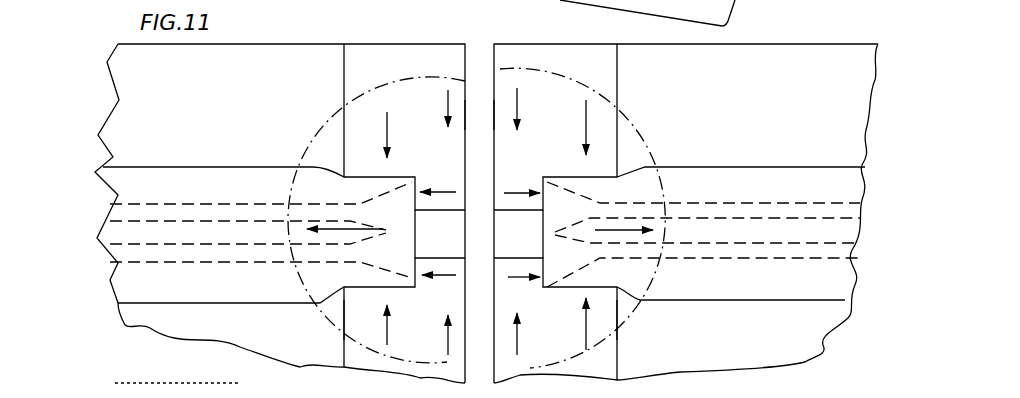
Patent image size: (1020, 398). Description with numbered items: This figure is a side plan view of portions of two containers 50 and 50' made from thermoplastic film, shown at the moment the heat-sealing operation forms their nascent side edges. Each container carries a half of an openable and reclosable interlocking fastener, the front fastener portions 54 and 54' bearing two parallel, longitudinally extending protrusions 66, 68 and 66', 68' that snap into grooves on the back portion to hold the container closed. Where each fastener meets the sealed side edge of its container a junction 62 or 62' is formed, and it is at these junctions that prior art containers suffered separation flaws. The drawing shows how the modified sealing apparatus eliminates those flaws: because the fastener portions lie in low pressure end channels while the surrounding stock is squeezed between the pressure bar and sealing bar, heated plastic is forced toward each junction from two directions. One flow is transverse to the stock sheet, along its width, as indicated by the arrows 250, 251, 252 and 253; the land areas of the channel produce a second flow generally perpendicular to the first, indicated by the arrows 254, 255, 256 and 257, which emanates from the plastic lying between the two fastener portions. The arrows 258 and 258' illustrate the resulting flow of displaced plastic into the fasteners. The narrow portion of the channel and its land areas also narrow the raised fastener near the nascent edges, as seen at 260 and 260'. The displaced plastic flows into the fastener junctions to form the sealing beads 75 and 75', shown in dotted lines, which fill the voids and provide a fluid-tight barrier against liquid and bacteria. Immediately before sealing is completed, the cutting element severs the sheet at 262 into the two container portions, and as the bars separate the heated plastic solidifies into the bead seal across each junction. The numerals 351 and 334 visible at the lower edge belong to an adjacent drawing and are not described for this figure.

The container 50 is at (280, 213).
The container 50' is at (689, 213).
The front half of fastener 54 is at (261, 205).
The front half of fastener 54' is at (704, 212).
The protrusion 66 is at (235, 206).
The protrusion 66' is at (730, 207).
The protrusion 68 is at (235, 255).
The protrusion 68' is at (730, 260).
The junction 62 is at (376, 220).
The junction 62' is at (590, 218).
The bead seal 75 is at (317, 320).
The bead seal 75' is at (645, 326).
The arrow 250 is at (446, 342).
The arrow 251 is at (446, 115).
The arrow 252 is at (584, 120).
The arrow 253 is at (584, 328).
The arrow 254 is at (441, 277).
The arrow 255 is at (441, 190).
The arrow 256 is at (518, 190).
The arrow 257 is at (520, 280).
The arrow 258 is at (345, 205).
The arrow 258' is at (624, 206).
The narrowing of raised fastener 260 is at (433, 234).
The narrowing of raised fastener 260' is at (522, 234).
The severing location 262 is at (480, 58).
The element of adjacent figure 351 is at (219, 390).
The element of adjacent figure 334 is at (294, 395).